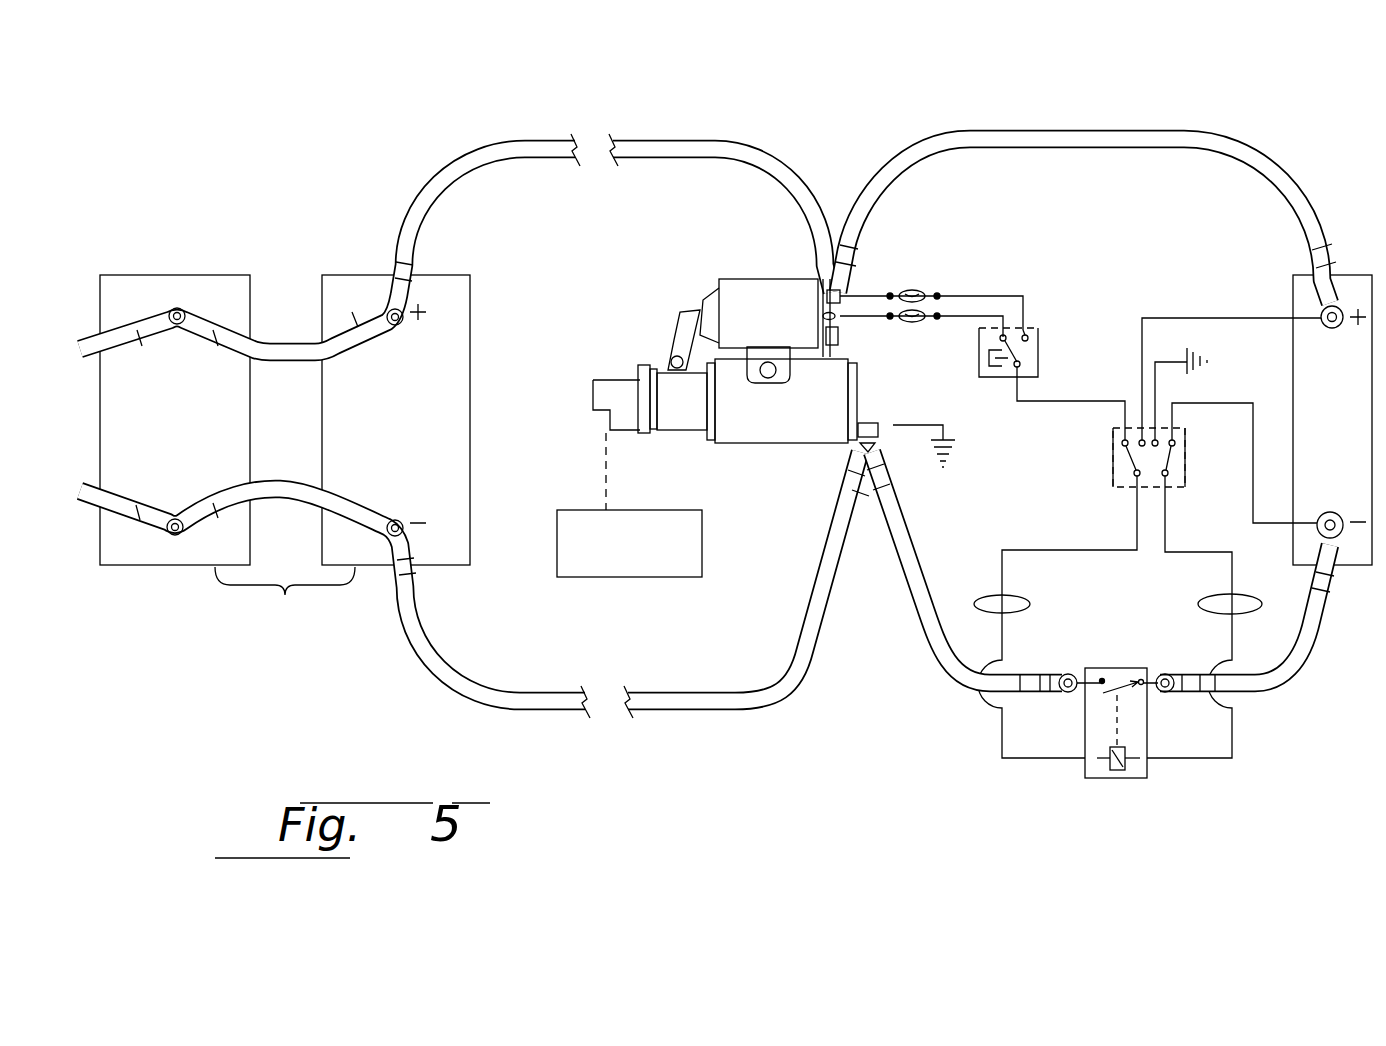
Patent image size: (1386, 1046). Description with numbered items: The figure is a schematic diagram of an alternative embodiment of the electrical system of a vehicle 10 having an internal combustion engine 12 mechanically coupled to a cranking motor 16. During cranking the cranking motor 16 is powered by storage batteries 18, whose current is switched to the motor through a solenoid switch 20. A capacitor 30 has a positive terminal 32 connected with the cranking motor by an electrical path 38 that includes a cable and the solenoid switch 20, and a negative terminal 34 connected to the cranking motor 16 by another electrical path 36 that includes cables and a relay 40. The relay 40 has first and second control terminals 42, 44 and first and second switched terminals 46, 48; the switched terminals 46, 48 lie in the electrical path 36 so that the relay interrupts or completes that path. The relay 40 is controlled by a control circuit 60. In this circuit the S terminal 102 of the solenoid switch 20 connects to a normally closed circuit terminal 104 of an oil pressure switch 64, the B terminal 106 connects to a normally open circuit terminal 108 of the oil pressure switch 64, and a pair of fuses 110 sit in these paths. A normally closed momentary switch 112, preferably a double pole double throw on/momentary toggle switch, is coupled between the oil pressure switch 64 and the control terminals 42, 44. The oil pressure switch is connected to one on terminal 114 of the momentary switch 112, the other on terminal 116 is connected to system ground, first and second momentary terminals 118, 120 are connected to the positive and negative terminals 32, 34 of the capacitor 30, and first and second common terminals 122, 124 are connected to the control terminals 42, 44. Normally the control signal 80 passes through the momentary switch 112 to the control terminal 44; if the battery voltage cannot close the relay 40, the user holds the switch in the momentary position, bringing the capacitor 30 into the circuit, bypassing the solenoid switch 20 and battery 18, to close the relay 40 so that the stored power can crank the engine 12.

The vehicle 10 is at (577, 244).
The internal combustion engine 12 is at (629, 505).
The cranking motor 16 is at (763, 450).
The storage batteries 18 is at (285, 455).
The solenoid switch 20 is at (753, 277).
The capacitor 30 is at (1293, 442).
The positive terminal 32 is at (1322, 311).
The negative terminal 34 is at (1318, 511).
The electrical path 36 is at (1293, 675).
The electrical path 38 is at (1112, 130).
The relay 40 is at (1113, 667).
The first control terminal 42 is at (1087, 760).
The second control terminal 44 is at (1150, 760).
The first switched terminal 46 is at (1070, 675).
The second switched terminal 48 is at (1170, 675).
The control circuit 60 is at (1084, 339).
The oil pressure switch 64 is at (979, 363).
The control signal 80 is at (1251, 603).
The S terminal 102 is at (837, 321).
The normally closed circuit terminal 104 is at (1000, 335).
The B terminal 106 is at (860, 290).
The normally open circuit terminal 108 is at (1037, 333).
The fuses 110 is at (920, 290).
The momentary switch 112 is at (1187, 462).
The on terminal 114 is at (1117, 443).
The on terminal 116 is at (1158, 428).
The first momentary terminal 118 is at (1130, 427).
The second momentary terminal 120 is at (1180, 437).
The first common terminal 122 is at (1190, 313).
The second common terminal 124 is at (1253, 423).